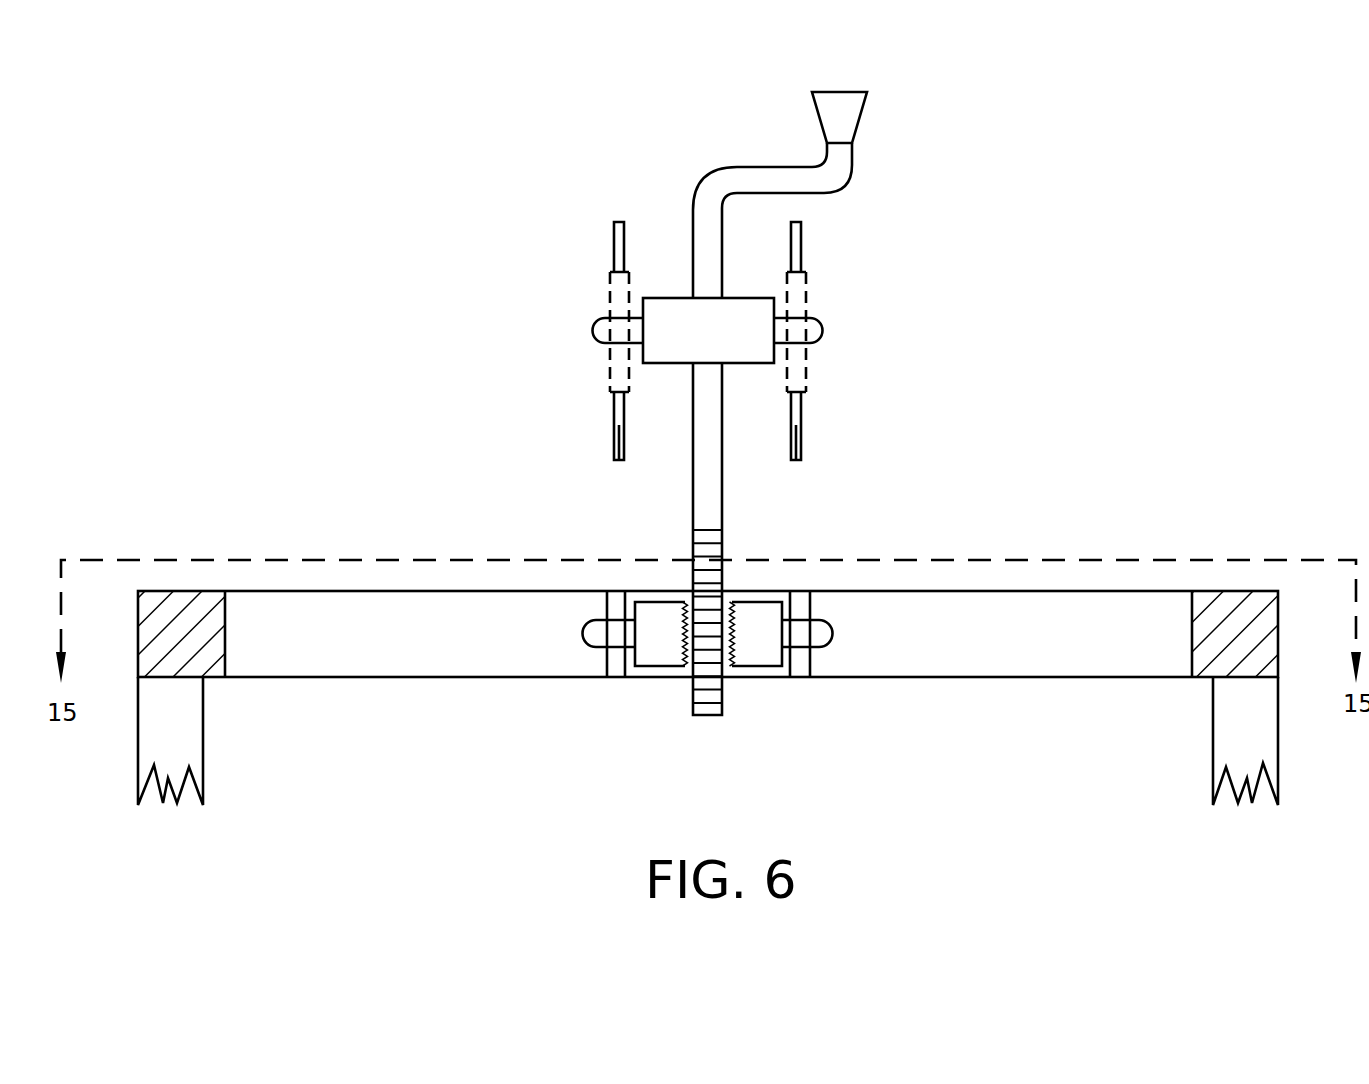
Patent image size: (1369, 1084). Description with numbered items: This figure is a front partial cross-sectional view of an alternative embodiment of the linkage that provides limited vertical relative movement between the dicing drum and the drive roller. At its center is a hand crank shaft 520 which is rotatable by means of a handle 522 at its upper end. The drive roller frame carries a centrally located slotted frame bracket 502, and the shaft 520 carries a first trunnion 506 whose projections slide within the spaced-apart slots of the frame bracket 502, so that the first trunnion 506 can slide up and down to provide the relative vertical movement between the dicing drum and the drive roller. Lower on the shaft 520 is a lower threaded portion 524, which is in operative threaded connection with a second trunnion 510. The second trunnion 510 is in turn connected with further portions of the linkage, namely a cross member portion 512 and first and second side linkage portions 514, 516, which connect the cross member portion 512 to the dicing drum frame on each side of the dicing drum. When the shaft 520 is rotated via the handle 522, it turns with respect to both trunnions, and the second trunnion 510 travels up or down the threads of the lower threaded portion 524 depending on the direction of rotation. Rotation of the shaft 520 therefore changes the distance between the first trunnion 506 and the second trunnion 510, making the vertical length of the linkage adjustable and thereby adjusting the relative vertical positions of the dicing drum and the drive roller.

The slotted frame bracket 502 is at (797, 238).
The first trunnion 506 is at (738, 363).
The second trunnion 510 is at (745, 607).
The cross member portion 512 is at (470, 678).
The first side linkage portion 514 is at (138, 740).
The second side linkage portion 516 is at (1278, 745).
The central hand crank shaft 520 is at (705, 185).
The handle 522 is at (850, 132).
The lower threaded portion 524 is at (693, 578).